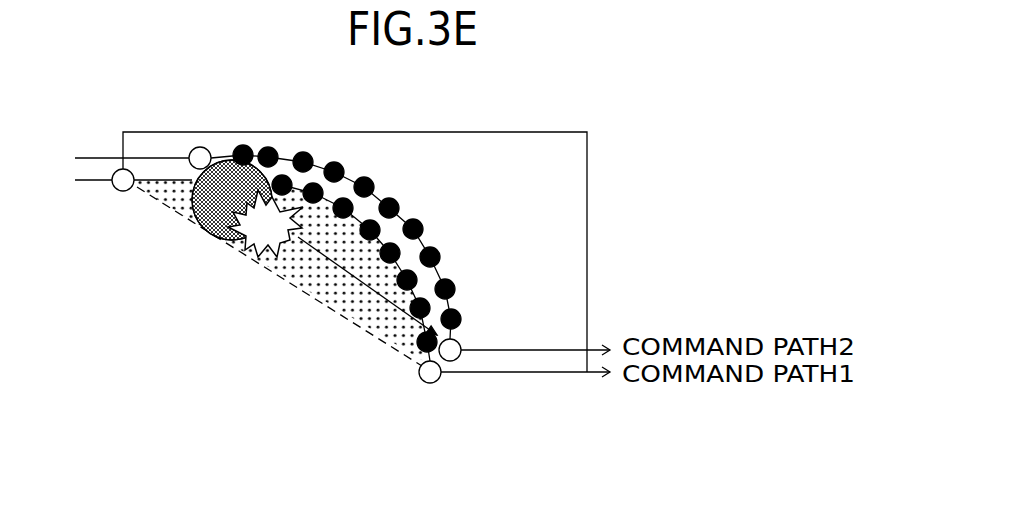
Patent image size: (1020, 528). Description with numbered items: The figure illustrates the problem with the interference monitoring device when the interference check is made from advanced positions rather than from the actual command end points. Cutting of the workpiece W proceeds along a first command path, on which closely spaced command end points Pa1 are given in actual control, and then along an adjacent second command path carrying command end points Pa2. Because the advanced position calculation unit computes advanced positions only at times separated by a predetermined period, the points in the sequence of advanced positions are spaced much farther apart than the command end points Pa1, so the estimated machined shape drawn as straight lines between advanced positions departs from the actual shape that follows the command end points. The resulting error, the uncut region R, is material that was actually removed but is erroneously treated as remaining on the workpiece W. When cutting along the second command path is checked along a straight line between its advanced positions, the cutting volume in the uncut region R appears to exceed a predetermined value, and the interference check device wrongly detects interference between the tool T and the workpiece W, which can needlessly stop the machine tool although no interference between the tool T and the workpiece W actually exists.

The workpiece W is at (534, 131).
The tool T is at (217, 237).
The uncut region R is at (332, 295).
The command end points Pa1 is at (313, 167).
The command end points Pa2 is at (388, 200).